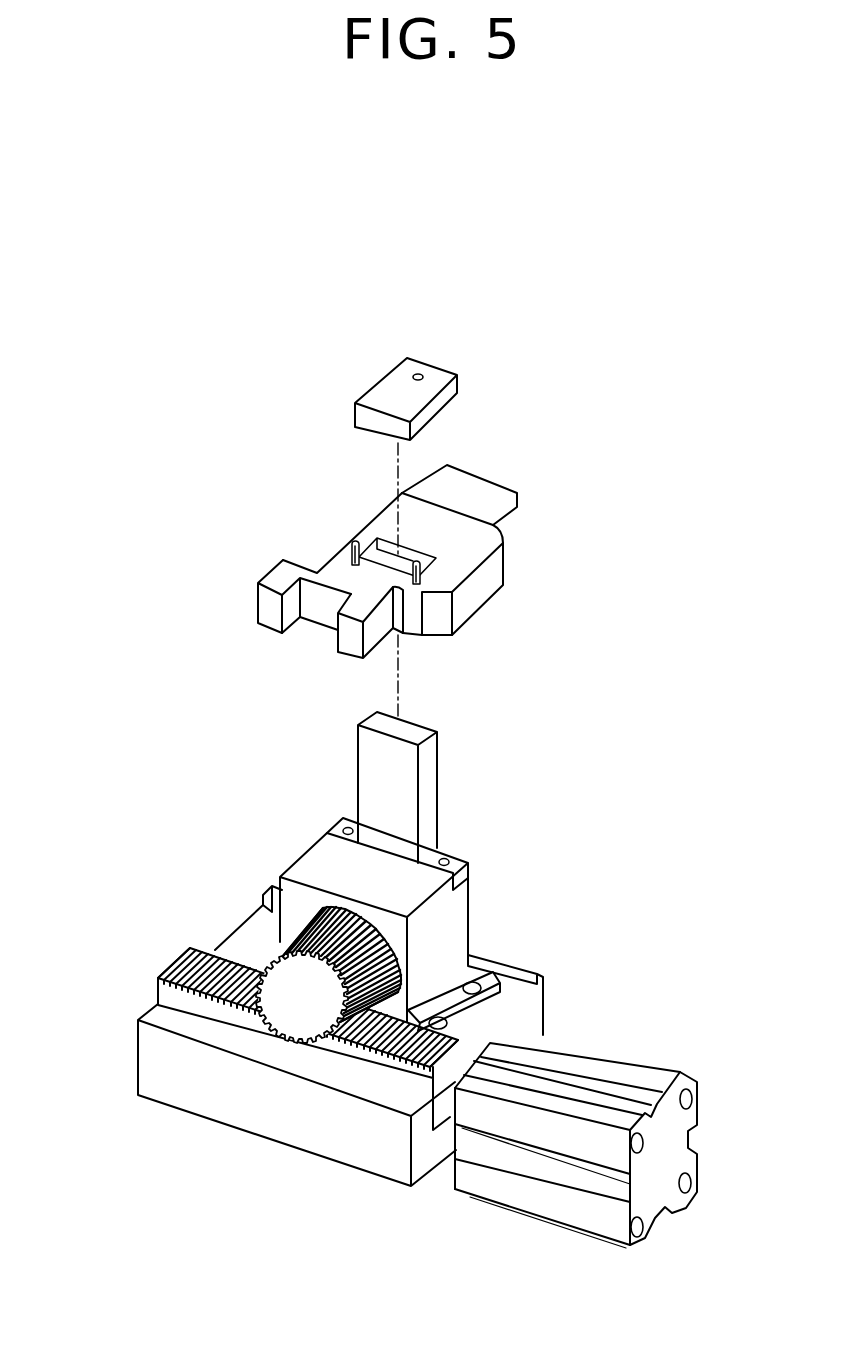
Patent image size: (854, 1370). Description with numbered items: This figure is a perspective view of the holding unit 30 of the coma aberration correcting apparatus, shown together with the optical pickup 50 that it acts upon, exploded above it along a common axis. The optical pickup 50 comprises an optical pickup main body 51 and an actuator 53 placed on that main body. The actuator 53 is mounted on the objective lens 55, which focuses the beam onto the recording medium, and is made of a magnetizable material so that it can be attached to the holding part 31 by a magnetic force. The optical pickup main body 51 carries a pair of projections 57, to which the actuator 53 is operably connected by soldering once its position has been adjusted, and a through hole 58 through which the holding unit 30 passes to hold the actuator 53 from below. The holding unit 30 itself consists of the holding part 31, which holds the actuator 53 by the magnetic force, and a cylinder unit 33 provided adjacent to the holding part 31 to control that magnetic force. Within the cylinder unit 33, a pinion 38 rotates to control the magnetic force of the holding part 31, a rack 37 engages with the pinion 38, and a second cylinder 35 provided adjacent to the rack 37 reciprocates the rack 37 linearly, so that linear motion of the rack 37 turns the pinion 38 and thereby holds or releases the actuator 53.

The holding unit 30 is at (166, 886).
The holding part 31 is at (430, 777).
The cylinder unit 33 is at (390, 1303).
The second cylinder 35 is at (483, 1187).
The rack 37 is at (410, 1065).
The pinion 38 is at (313, 1017).
The optical pickup 50 is at (195, 370).
The optical pickup main body 51 is at (285, 573).
The actuator 53 is at (368, 412).
The objective lens 55 is at (410, 380).
The projections 57 is at (412, 572).
The through hole 58 is at (398, 555).